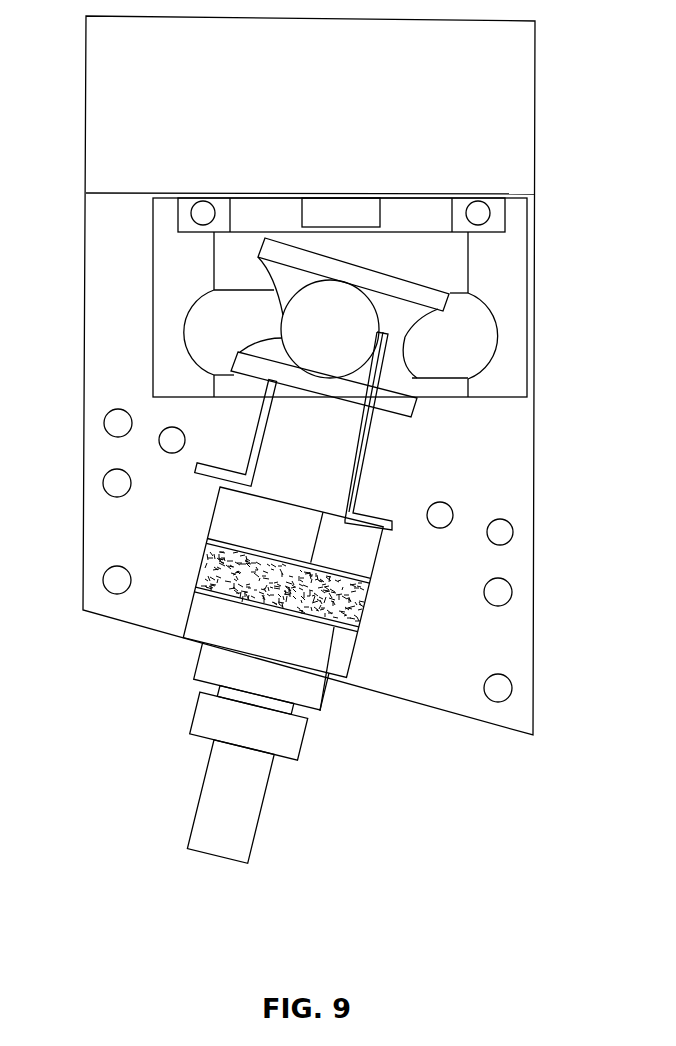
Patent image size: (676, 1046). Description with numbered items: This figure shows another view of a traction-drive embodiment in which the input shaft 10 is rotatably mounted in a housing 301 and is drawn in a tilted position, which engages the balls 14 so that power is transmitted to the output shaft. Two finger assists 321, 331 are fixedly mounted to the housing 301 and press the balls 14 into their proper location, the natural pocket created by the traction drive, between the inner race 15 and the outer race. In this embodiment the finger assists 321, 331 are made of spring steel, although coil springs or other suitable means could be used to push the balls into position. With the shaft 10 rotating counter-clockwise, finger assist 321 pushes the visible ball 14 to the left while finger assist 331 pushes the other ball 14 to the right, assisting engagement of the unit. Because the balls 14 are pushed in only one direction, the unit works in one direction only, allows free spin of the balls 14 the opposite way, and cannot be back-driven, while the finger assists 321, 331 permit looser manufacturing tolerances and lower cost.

The input shaft 10 is at (248, 814).
The ball 14 is at (352, 328).
The inner race 15 is at (410, 382).
The housing 301 is at (505, 638).
The finger assist 321 is at (352, 470).
The finger assist 331 is at (255, 430).